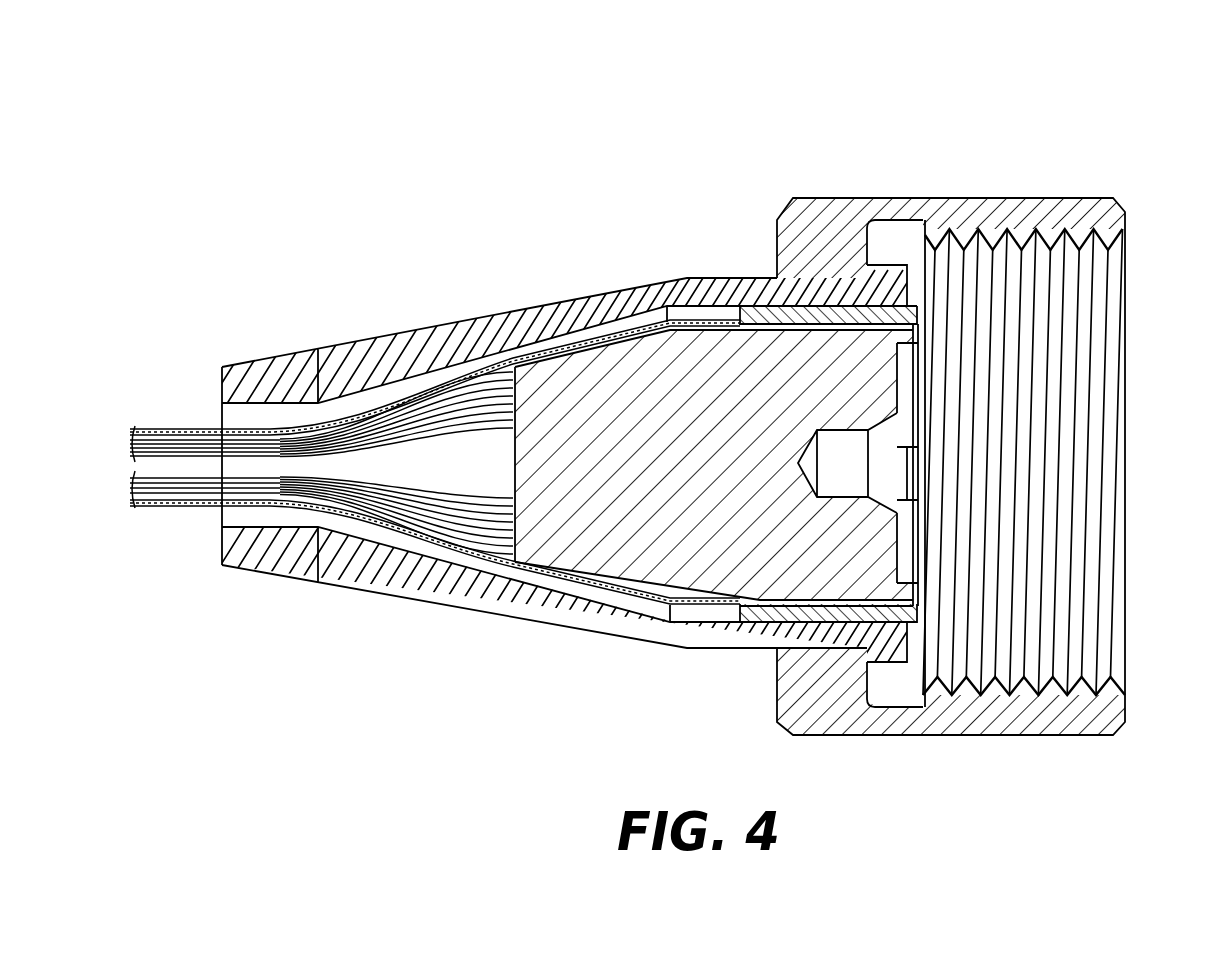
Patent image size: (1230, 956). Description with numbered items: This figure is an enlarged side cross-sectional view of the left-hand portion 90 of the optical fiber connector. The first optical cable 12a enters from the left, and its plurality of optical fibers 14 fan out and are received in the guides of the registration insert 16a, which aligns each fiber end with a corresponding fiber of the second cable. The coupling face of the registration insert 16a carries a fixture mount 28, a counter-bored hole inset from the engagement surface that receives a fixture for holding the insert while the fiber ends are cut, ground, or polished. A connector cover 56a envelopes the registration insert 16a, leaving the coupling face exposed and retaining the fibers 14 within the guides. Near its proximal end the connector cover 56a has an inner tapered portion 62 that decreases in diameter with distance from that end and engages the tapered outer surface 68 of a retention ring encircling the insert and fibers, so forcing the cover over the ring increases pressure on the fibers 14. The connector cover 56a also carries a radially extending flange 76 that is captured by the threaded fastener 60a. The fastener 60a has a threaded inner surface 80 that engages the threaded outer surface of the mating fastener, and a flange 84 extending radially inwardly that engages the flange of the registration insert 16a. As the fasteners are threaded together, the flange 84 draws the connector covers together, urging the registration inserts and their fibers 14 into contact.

The left-hand portion 90 is at (397, 99).
The optical cable 12a is at (165, 430).
The optical fibers 14 is at (447, 497).
The registration insert 16a is at (617, 378).
The fixture mount 28 is at (920, 529).
The connector cover 56a is at (432, 355).
The threaded fastener 60a is at (990, 198).
The inner tapered portion 62 is at (834, 640).
The tapered outer surface 68 is at (761, 611).
The flange 76 is at (887, 268).
The threaded inner surface 80 is at (1072, 320).
The flange 84 is at (840, 257).